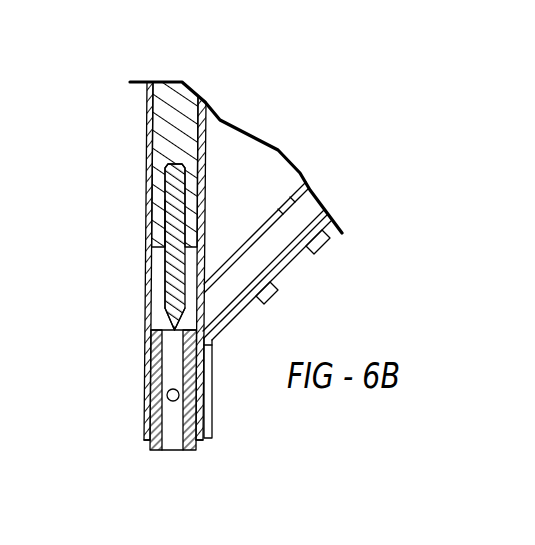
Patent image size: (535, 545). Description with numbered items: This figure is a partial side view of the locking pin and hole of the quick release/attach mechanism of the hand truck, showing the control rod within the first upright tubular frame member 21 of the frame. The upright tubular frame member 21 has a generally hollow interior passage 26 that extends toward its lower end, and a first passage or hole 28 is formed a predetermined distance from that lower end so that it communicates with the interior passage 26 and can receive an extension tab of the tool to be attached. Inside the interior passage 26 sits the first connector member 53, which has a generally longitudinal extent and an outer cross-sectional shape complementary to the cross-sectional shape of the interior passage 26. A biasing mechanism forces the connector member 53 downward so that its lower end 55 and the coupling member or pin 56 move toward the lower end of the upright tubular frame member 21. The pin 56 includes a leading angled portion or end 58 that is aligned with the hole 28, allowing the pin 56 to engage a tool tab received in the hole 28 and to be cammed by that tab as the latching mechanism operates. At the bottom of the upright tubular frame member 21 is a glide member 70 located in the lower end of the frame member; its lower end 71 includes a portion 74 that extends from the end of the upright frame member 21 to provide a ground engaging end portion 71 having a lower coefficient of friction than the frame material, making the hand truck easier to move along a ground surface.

The first upright tubular frame member 21 is at (147, 148).
The interior passage 26 is at (176, 80).
The first passage or hole 28 is at (164, 307).
The first connector member 53 is at (183, 112).
The lower end of the connector member 55 is at (192, 250).
The coupling member or pin 56 is at (168, 277).
The leading angled portion or end 58 is at (168, 323).
The glide member 70 is at (150, 452).
The lower end of the glide member 71 is at (192, 452).
The extending portion 74 is at (197, 447).